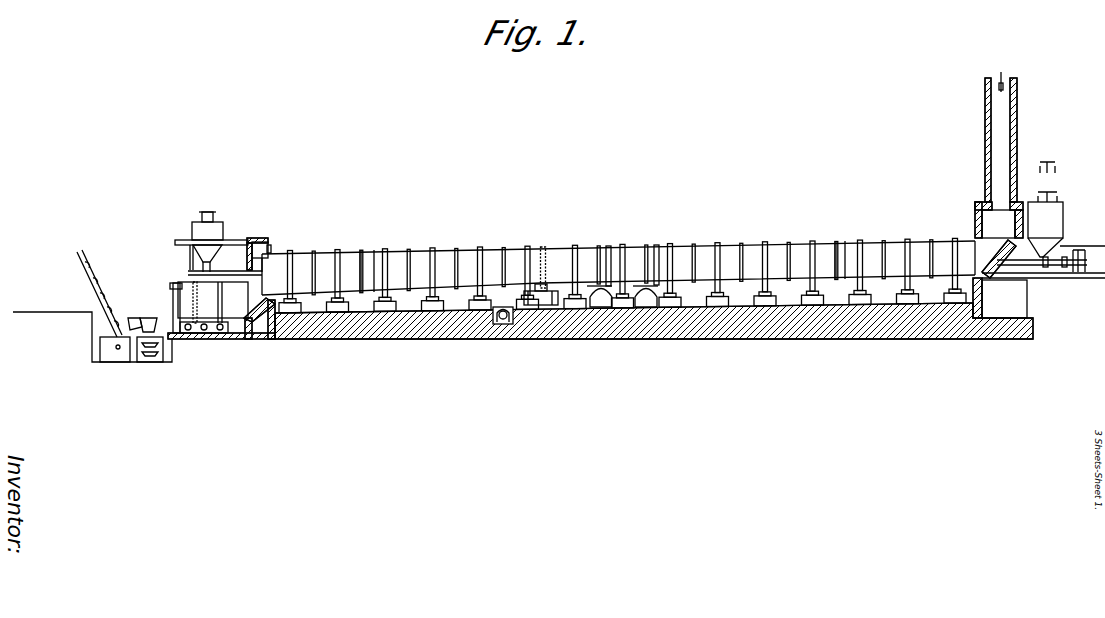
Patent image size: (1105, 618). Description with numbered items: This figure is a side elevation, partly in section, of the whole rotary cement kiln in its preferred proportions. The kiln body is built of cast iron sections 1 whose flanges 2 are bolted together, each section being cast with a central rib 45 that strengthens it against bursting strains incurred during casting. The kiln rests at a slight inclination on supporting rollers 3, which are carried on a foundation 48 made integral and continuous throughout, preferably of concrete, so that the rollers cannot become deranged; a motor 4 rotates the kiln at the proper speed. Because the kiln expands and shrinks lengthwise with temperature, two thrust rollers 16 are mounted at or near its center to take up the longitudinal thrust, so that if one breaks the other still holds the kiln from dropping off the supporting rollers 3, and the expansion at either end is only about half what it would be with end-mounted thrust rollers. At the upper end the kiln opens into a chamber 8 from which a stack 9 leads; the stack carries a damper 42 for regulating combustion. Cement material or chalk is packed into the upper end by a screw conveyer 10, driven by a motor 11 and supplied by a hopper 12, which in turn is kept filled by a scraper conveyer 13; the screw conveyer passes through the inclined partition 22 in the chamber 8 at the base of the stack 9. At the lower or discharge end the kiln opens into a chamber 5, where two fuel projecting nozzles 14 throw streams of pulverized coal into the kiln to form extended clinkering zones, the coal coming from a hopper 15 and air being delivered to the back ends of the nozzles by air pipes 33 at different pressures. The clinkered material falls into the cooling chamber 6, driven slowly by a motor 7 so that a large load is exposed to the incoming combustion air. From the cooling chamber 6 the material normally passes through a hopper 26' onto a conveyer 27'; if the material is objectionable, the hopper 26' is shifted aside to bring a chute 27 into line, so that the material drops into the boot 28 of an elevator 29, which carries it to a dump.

The cast iron section 1 is at (618, 269).
The flange 2 is at (622, 262).
The supporting roller 3 is at (378, 297).
The motor 4 is at (500, 333).
The chamber 5 is at (273, 249).
The cooling chamber 6 is at (221, 310).
The motor 7 is at (206, 336).
The chamber 8 is at (999, 220).
The stack 9 is at (1008, 140).
The screw conveyer 10 is at (1000, 298).
The motor 11 is at (1081, 258).
The hopper 12 is at (1045, 229).
The scraper conveyer 13 is at (1052, 172).
The fuel projecting nozzle 14 is at (249, 242).
The hopper 15 is at (226, 224).
The thrust roller 16 is at (592, 257).
The inclined partition 22 is at (999, 256).
The hopper 26' is at (148, 299).
The chute 27 is at (129, 307).
The conveyer 27' is at (150, 361).
The boot 28 is at (117, 351).
The elevator 29 is at (86, 287).
The air pipe 33 is at (188, 255).
The damper 42 is at (1010, 68).
The rib 45 is at (364, 250).
The foundation 48 is at (688, 332).